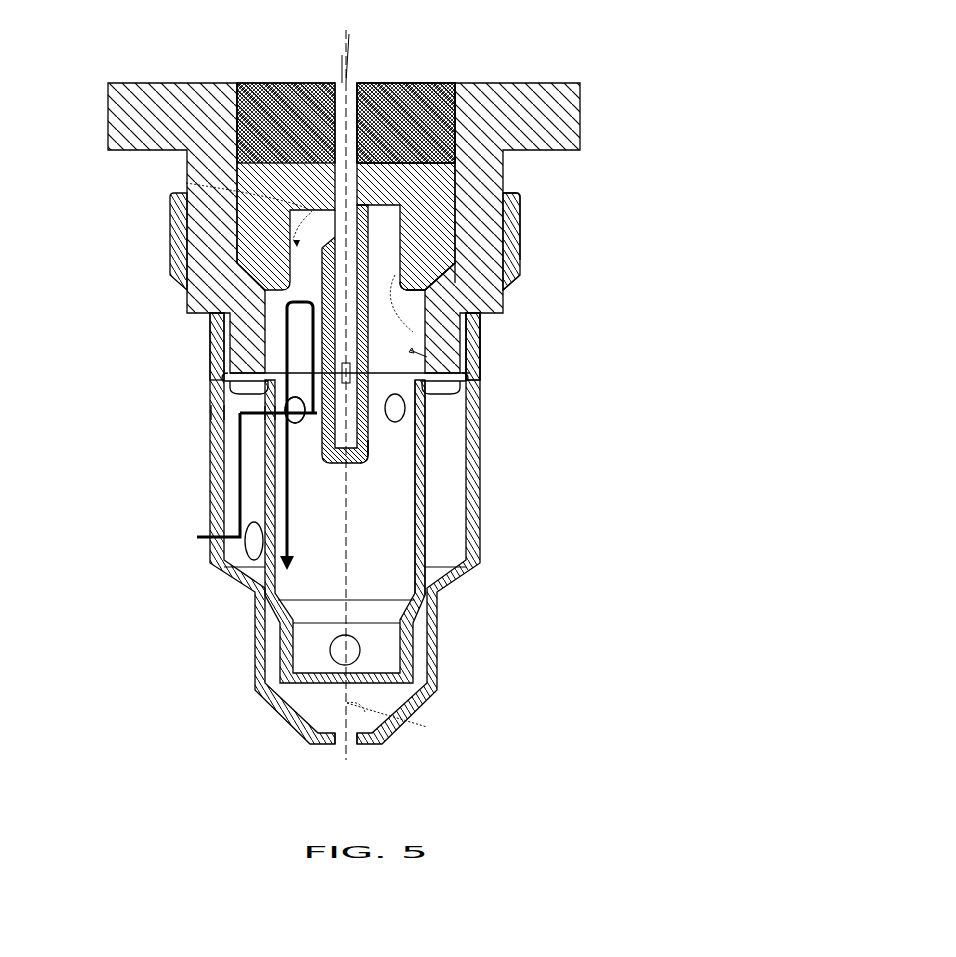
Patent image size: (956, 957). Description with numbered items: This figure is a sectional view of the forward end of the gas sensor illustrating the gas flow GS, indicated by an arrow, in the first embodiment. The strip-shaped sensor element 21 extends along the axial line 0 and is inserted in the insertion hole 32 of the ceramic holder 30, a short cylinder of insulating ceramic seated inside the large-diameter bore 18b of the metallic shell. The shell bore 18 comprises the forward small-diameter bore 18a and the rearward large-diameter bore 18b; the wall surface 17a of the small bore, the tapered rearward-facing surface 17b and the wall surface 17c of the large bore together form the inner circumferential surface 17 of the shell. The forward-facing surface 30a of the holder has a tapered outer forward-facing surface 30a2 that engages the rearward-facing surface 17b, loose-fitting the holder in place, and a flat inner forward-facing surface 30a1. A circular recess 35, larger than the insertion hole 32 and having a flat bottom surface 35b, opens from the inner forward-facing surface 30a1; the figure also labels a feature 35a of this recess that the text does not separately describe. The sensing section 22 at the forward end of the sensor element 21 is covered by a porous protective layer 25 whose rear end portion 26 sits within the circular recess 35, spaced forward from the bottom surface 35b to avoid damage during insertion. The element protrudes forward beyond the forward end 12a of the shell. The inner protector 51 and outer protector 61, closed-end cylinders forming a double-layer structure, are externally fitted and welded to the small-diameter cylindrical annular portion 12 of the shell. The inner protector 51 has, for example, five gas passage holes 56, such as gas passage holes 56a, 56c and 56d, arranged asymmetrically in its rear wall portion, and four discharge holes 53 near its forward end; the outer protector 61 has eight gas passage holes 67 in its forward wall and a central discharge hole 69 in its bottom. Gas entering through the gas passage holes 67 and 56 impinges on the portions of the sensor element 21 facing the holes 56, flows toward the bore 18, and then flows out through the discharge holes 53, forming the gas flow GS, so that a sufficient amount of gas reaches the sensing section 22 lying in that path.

The cylindrical annular portion 12 is at (470, 355).
The forward end of the metallic shell 12a is at (232, 385).
The inner circumferential surface 17 is at (585, 195).
The wall surface of the small-diameter bore 17a is at (508, 282).
The rearward-facing surface 17b is at (520, 235).
The wall surface of the large-diameter bore 17c is at (521, 198).
The bore 18 is at (408, 353).
The small-diameter bore 18a is at (478, 368).
The large-diameter bore 18b is at (407, 83).
The sensor element 21 is at (427, 460).
The sensing section 22 is at (427, 401).
The protective layer 25 is at (313, 464).
The rear end portion of the protective layer 26 is at (171, 213).
The ceramic holder 30 is at (440, 83).
The forward-facing surface 30a is at (583, 298).
The inner forward-facing surface 30a1 is at (460, 294).
The outer forward-facing surface 30a2 is at (457, 285).
The insertion hole 32 is at (345, 241).
The circular recess 35 is at (307, 83).
The seal lower end 35a is at (457, 284).
The bottom surface 35b is at (382, 83).
The inner protector 51 is at (430, 505).
The discharge holes 53 is at (433, 648).
The gas passage holes 56 is at (359, 428).
The gas passage hole 56a is at (240, 413).
The gas passage hole 56c is at (268, 416).
The gas passage hole 56d is at (380, 447).
The outer protector 61 is at (474, 561).
The gas passage holes 67 is at (212, 546).
The discharge hole 69 is at (350, 747).
The axial line 0 is at (393, 721).
The gas flow GS is at (257, 491).